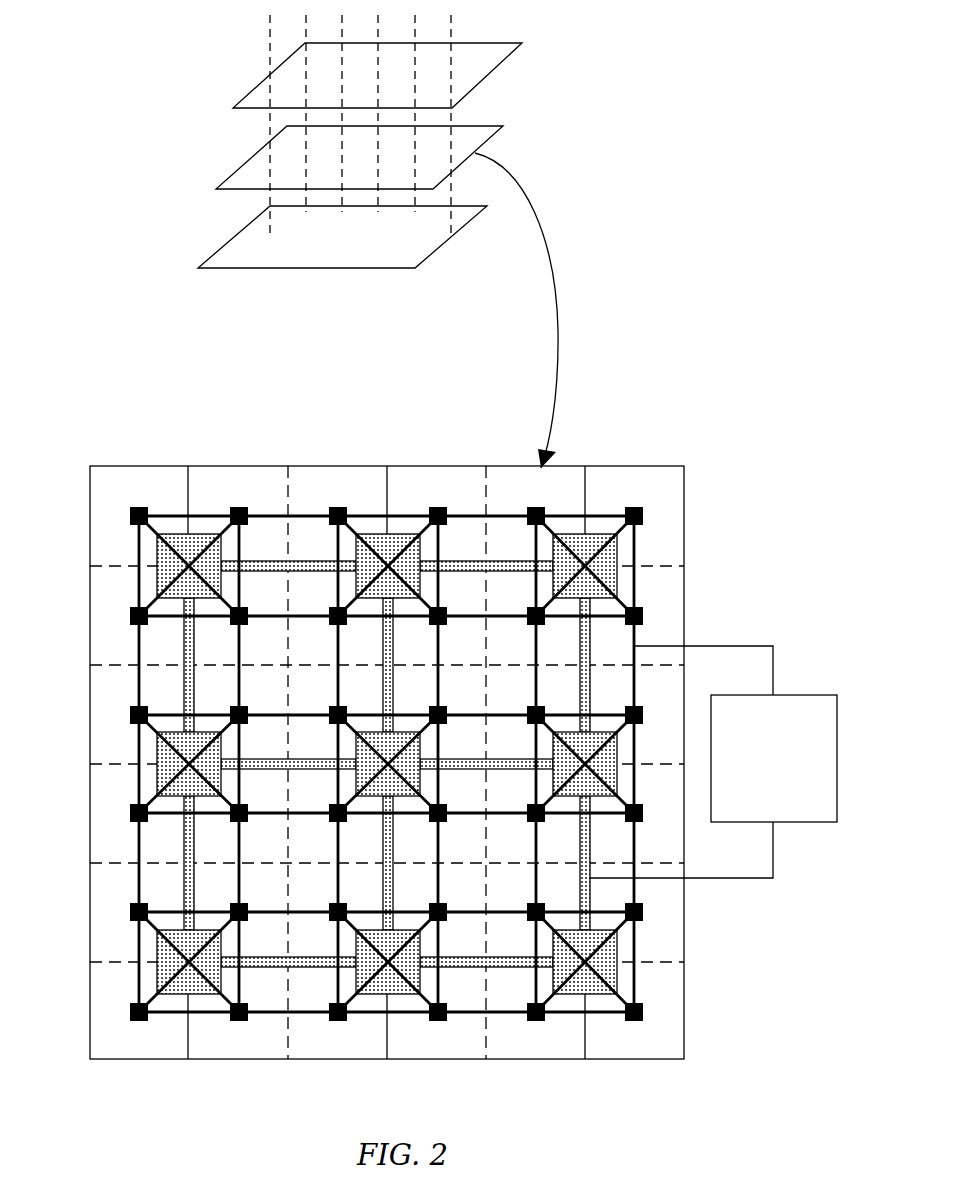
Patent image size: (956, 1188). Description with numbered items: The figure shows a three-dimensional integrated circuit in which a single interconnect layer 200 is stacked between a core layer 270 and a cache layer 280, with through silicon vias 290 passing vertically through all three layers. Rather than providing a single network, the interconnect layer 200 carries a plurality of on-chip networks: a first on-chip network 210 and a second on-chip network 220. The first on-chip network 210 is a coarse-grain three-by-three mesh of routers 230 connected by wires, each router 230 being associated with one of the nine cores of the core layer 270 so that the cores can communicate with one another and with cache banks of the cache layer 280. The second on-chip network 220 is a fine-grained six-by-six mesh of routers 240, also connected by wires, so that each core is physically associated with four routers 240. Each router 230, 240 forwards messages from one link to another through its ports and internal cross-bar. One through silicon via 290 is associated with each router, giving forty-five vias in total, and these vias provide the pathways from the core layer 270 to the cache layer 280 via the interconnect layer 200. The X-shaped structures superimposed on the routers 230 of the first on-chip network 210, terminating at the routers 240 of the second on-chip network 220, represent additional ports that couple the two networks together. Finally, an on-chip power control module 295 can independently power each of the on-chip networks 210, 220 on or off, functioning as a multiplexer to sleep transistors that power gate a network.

The interconnect layer 200 is at (262, 148).
The first on-chip network 210 is at (183, 653).
The second on-chip network 220 is at (139, 552).
The router 230 is at (158, 793).
The router 240 is at (132, 717).
The core layer 270 is at (236, 235).
The cache layer 280 is at (253, 88).
The through silicon vias 290 is at (268, 32).
The power control module 295 is at (790, 812).